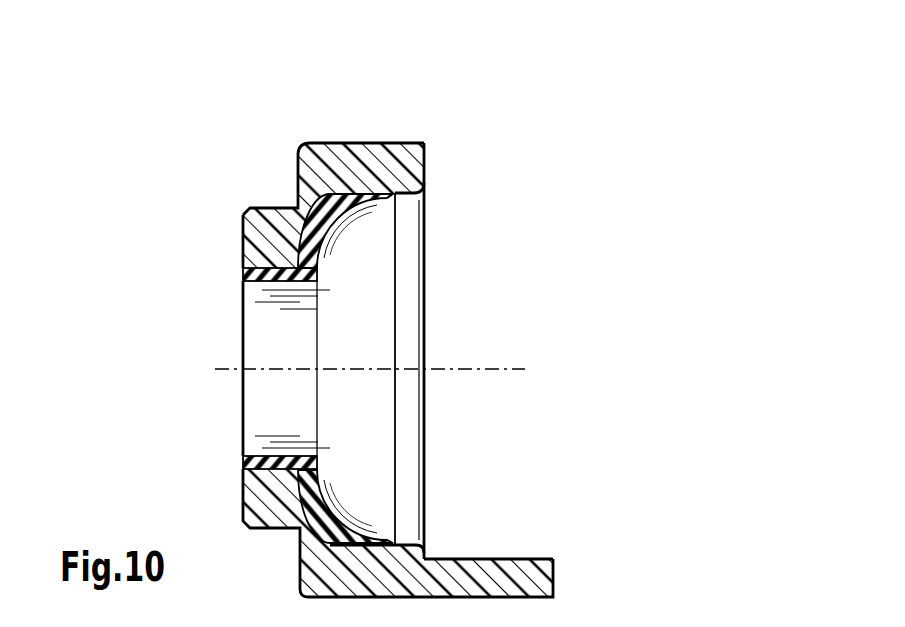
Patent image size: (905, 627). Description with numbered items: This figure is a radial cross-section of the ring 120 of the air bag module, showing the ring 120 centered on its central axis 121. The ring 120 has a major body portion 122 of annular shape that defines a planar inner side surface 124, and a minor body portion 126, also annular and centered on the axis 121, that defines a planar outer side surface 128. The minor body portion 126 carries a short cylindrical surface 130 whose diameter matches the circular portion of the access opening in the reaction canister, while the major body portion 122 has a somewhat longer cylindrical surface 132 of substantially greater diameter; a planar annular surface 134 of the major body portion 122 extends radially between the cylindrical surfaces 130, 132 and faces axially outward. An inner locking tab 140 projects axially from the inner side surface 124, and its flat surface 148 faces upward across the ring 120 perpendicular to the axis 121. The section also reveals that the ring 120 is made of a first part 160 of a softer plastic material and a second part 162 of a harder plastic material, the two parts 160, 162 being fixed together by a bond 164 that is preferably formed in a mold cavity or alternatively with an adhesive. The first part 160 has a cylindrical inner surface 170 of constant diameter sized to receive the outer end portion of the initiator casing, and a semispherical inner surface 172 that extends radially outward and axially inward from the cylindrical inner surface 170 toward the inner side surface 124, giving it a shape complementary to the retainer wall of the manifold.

The ring 120 is at (164, 213).
The central axis 121 is at (245, 365).
The major body portion 122 is at (395, 165).
The planar inner side surface 124 is at (424, 178).
The minor body portion 126 is at (256, 244).
The planar outer side surface 128 is at (245, 497).
The cylindrical surface 130 is at (275, 208).
The cylindrical surface 132 is at (348, 143).
The planar annular surface 134 is at (298, 168).
The inner locking tab 140 is at (553, 580).
The flat surface 148 is at (512, 558).
The first part 160 is at (395, 272).
The second part 162 is at (424, 163).
The bond 164 is at (285, 274).
The cylindrical inner surface 170 is at (273, 466).
The semispherical inner surface 172 is at (370, 480).